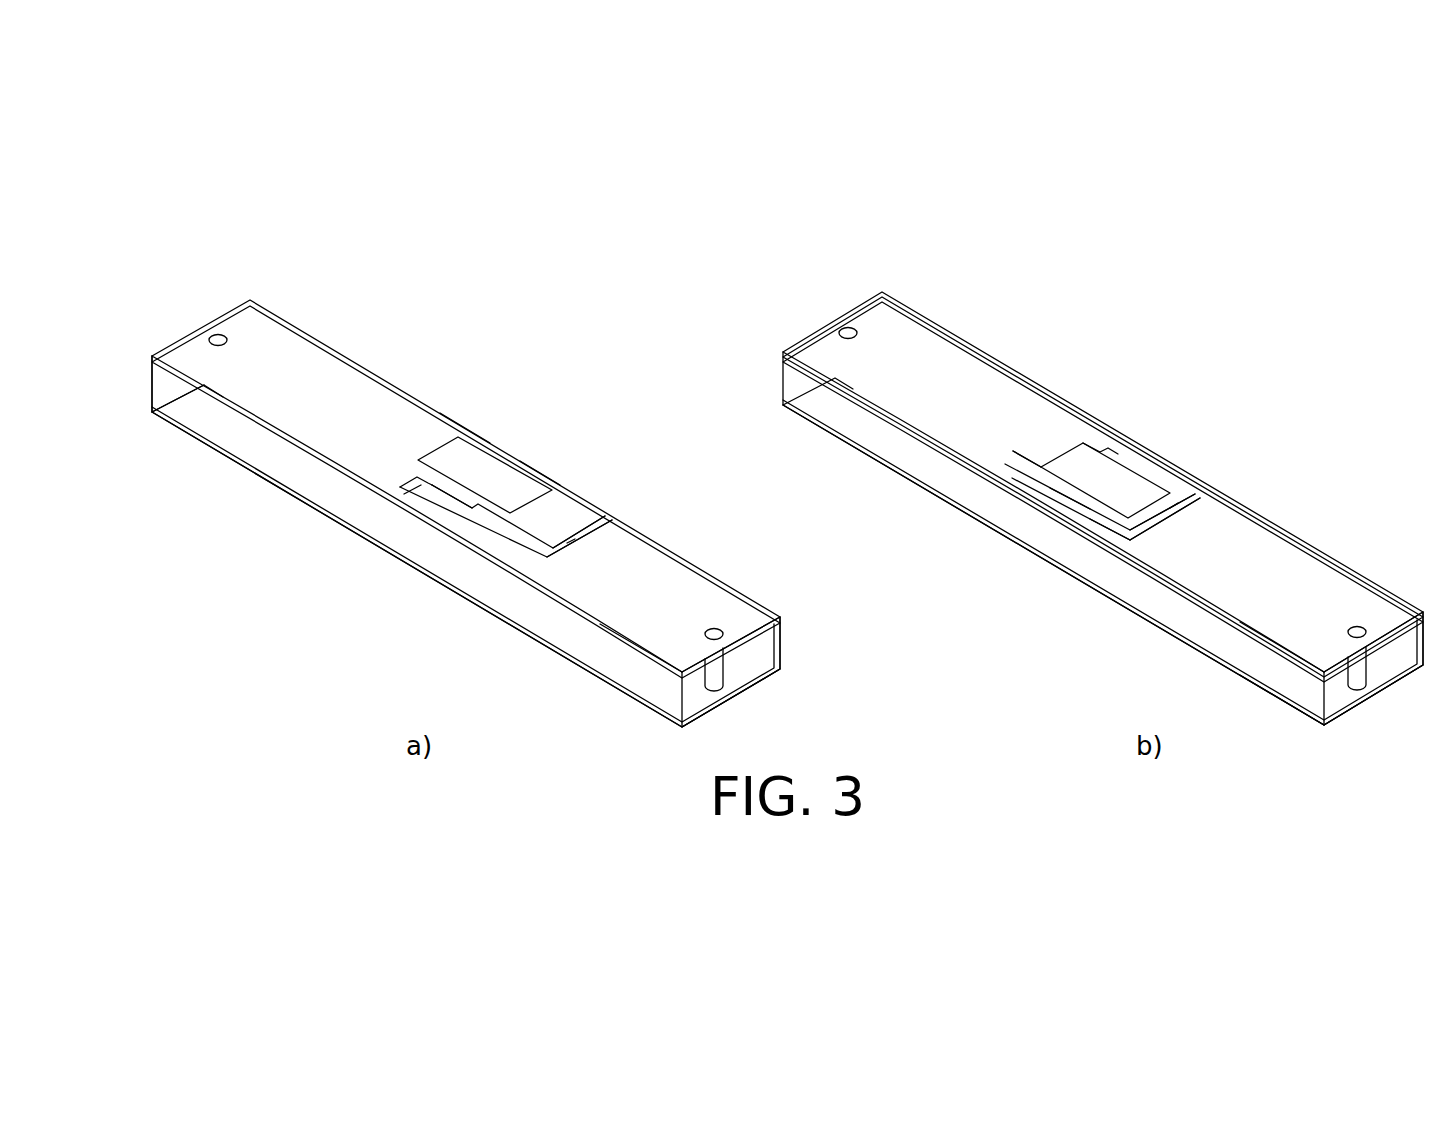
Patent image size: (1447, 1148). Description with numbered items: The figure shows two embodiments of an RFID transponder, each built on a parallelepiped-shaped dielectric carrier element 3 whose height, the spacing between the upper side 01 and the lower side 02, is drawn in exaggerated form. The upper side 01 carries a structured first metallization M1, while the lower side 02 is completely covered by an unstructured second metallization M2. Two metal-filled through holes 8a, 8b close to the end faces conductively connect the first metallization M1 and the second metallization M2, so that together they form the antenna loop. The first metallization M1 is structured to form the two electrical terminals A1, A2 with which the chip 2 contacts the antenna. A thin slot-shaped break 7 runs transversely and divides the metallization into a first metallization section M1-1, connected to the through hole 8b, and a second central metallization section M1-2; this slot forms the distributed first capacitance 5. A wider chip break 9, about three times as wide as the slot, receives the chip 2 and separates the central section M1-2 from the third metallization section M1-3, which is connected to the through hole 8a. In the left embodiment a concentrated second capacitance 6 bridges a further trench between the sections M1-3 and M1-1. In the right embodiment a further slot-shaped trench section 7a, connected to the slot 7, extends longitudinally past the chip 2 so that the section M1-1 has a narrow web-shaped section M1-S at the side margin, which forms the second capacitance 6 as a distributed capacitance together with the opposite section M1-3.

The upper side 01 is at (704, 542).
The lower side 02 is at (645, 730).
The chip 2 is at (507, 488).
The dielectric carrier element 3 is at (212, 428).
The first capacitance 5 is at (836, 504).
The second capacitance 6 is at (403, 488).
The slot-shaped break 7 is at (601, 515).
The further slot-shaped trench section 7a is at (1087, 422).
The metal-filled through hole 8a is at (210, 337).
The metal-filled through hole 8b is at (716, 672).
The chip break 9 is at (450, 498).
The first electrical terminal A1 is at (466, 425).
The second electrical terminal A2 is at (541, 470).
The first metallization M1 is at (323, 368).
The first metallization section M1-1 is at (706, 596).
The second central metallization section M1-2 is at (566, 512).
The third metallization section M1-3 is at (787, 450).
The web-shaped section M1-S is at (935, 258).
The second metallization M2 is at (545, 678).